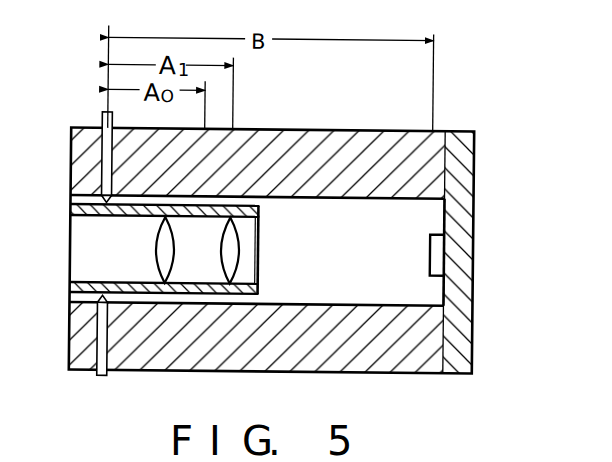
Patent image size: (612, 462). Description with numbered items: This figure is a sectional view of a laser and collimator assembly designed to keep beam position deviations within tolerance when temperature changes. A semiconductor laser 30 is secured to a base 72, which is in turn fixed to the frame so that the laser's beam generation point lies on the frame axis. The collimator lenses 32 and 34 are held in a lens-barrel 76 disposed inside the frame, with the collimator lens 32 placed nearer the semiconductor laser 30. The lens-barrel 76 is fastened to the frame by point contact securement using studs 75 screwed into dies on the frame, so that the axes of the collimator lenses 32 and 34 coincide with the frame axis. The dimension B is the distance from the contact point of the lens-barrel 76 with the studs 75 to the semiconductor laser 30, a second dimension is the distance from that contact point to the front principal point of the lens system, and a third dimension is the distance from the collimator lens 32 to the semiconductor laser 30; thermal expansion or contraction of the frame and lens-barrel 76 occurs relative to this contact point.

The base 72 is at (466, 177).
The semiconductor laser 30 is at (433, 252).
The collimator lens 32 is at (240, 249).
The collimator lens 34 is at (156, 248).
The stud 75 is at (108, 378).
The lens-barrel 76 is at (86, 212).